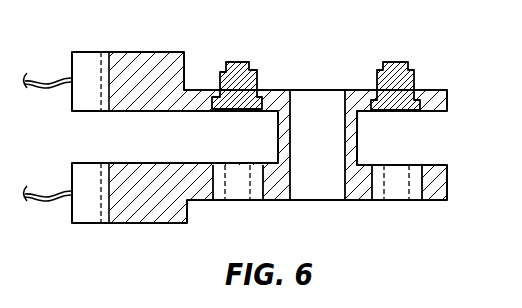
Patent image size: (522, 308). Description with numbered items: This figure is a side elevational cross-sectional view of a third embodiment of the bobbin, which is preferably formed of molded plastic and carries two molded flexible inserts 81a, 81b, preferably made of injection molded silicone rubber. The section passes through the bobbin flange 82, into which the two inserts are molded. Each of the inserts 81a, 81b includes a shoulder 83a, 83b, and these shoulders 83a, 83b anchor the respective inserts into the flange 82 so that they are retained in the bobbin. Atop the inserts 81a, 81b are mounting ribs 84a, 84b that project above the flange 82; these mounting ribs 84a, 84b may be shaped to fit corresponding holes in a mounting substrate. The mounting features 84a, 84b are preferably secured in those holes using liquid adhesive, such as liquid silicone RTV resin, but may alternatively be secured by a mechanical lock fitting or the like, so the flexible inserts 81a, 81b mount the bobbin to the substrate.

The molded flexible insert 81a is at (217, 83).
The molded flexible insert 81b is at (377, 82).
The flange 82 is at (437, 88).
The shoulder 83a is at (237, 112).
The shoulder 83b is at (395, 112).
The mounting rib 84a is at (253, 68).
The mounting rib 84b is at (415, 65).